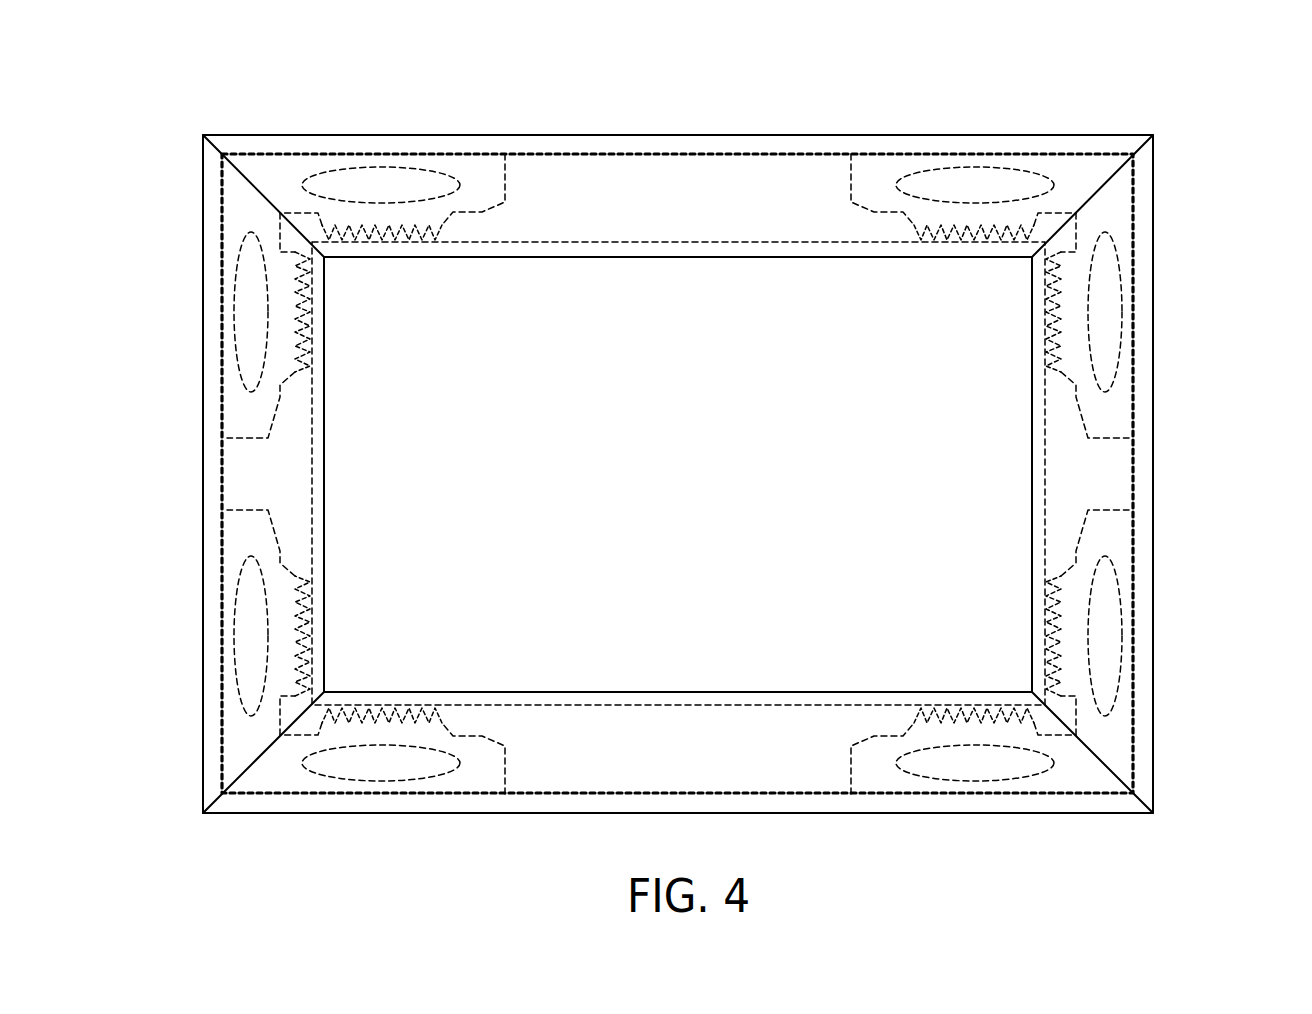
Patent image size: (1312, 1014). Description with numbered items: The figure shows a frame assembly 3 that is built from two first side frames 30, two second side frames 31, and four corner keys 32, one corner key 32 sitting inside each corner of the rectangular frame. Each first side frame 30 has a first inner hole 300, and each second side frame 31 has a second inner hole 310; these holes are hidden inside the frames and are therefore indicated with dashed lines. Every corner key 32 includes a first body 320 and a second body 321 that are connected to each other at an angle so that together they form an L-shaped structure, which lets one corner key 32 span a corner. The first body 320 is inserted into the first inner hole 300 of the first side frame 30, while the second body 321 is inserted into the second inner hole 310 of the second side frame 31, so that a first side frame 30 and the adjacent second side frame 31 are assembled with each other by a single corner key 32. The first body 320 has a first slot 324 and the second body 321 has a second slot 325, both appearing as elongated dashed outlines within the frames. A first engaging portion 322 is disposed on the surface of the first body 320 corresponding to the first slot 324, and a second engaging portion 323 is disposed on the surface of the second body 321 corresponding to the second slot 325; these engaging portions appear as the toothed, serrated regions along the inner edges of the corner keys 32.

The frame assembly 3 is at (1222, 96).
The first side frame 30 is at (830, 813).
The second side frame 31 is at (203, 417).
The corner key 32 is at (278, 786).
The first inner hole 300 is at (582, 795).
The second inner hole 310 is at (220, 470).
The first body 320 is at (482, 783).
The second body 321 is at (231, 532).
The first engaging portion 322 is at (436, 712).
The second engaging portion 323 is at (297, 565).
The first slot 324 is at (388, 786).
The second slot 325 is at (238, 697).